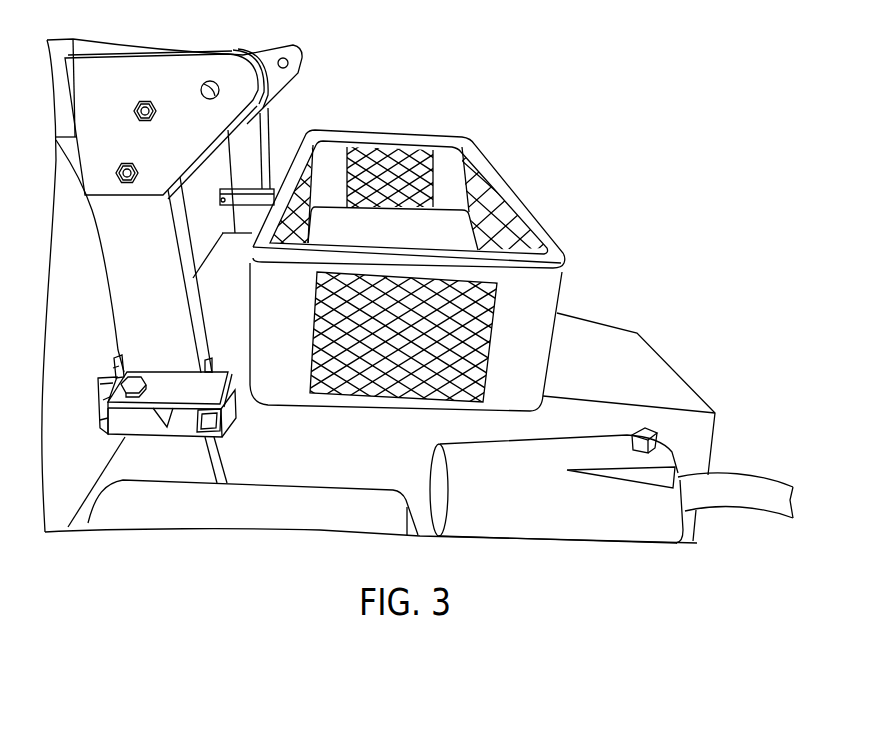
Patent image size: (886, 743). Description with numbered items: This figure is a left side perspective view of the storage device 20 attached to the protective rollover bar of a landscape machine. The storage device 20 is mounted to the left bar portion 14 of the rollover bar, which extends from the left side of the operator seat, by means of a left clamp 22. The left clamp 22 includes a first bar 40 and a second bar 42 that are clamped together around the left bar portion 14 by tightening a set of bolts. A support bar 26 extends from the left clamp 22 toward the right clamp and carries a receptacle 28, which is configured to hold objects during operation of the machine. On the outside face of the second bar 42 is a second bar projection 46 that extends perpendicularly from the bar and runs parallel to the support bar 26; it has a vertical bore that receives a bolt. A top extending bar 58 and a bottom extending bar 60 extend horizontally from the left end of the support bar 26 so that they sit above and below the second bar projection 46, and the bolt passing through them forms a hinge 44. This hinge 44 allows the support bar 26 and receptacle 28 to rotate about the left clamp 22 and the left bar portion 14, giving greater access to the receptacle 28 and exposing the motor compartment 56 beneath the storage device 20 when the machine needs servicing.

The left bar portion 14 is at (118, 231).
The storage device 20 is at (407, 263).
The left clamp 22 is at (146, 457).
The support bar 26 is at (242, 333).
The receptacle 28 is at (447, 157).
The first bar 40 is at (210, 362).
The second bar 42 is at (112, 378).
The hinge 44 is at (140, 380).
The second bar projection 46 is at (118, 417).
The motor compartment 56 is at (622, 346).
The top extending bar 58 is at (177, 380).
The bottom extending bar 60 is at (177, 425).